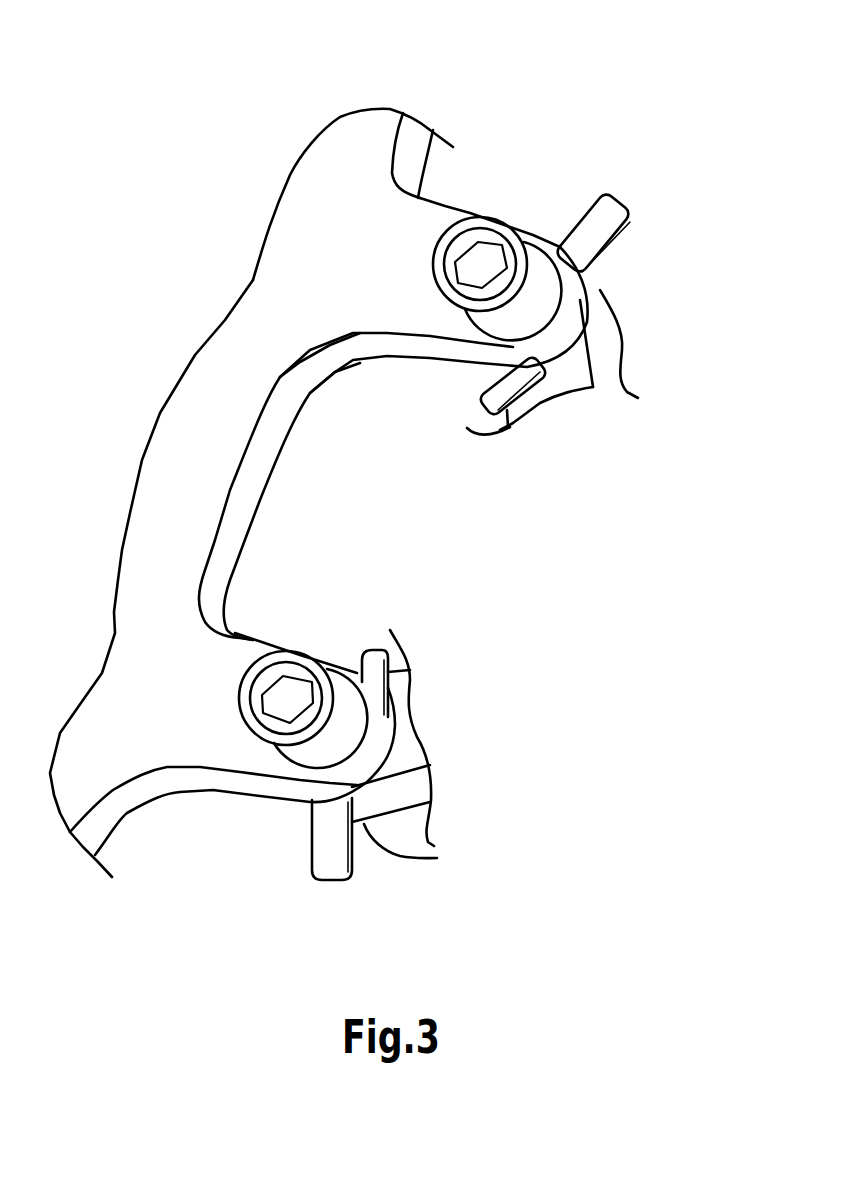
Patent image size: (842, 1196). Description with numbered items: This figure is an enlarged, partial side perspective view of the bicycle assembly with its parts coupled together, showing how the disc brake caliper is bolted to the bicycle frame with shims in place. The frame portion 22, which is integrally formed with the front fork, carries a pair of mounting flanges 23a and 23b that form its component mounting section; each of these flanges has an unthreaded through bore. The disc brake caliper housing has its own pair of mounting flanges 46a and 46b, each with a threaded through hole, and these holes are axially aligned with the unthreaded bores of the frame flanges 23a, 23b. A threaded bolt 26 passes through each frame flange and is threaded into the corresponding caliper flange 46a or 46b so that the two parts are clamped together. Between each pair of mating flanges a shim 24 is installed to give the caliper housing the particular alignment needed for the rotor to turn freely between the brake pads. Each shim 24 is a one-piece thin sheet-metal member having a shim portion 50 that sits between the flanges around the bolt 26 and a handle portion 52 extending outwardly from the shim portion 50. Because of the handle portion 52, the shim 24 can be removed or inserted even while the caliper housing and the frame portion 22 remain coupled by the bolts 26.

The frame portion 22 is at (442, 188).
The mounting flange 23a is at (467, 212).
The mounting flange 23b is at (240, 798).
The shim 24 is at (632, 207).
The threaded bolt 26 is at (448, 308).
The mounting flange 46a is at (607, 312).
The mounting flange 46b is at (437, 858).
The shim portion 50 is at (480, 407).
The handle portion 52 is at (602, 213).